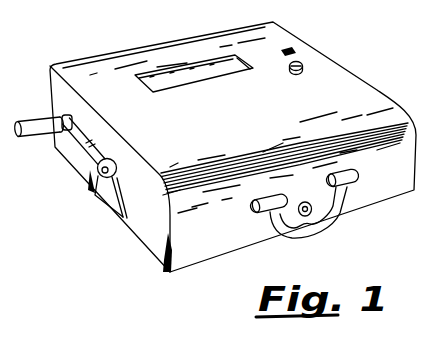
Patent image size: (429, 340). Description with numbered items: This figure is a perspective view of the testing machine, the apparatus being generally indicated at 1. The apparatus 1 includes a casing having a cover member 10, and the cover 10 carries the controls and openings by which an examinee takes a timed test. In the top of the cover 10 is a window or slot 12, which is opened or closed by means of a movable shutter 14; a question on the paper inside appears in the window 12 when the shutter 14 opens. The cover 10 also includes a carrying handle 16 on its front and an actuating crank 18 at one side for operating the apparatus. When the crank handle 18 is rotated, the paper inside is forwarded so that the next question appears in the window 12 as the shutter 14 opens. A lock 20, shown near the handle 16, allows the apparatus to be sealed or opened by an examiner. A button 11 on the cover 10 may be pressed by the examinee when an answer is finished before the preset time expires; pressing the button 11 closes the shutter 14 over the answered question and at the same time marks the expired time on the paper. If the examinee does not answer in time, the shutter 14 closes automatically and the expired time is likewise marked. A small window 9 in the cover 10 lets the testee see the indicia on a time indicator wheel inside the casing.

The apparatus 1 is at (360, 3).
The window 9 is at (289, 50).
The cover member 10 is at (271, 16).
The button 11 is at (303, 72).
The window or slot 12 is at (156, 93).
The movable shutter 14 is at (223, 69).
The carrying handle 16 is at (339, 213).
The actuating crank 18 is at (40, 119).
The lock 20 is at (302, 203).